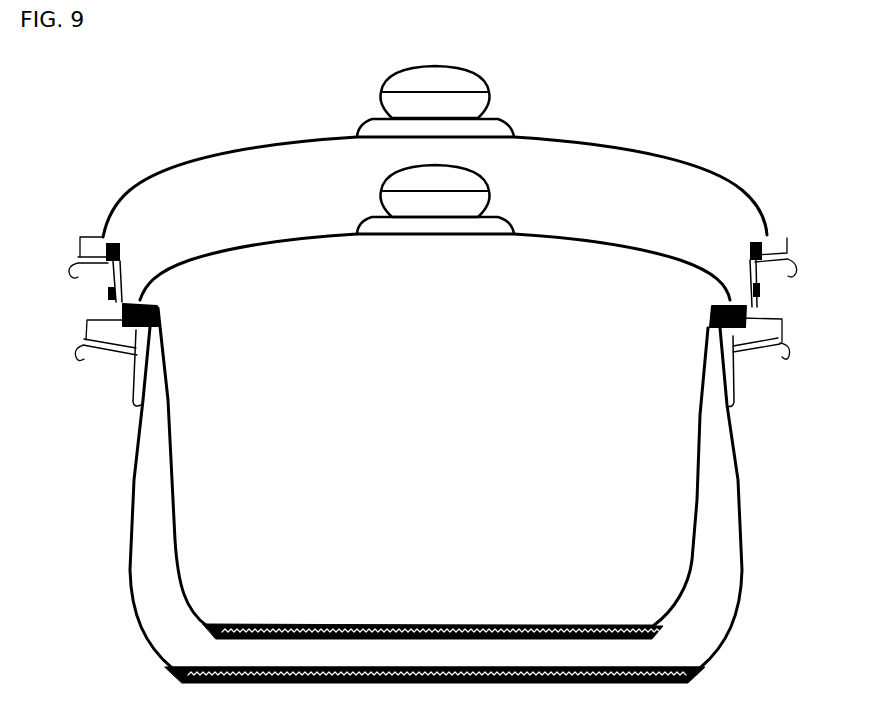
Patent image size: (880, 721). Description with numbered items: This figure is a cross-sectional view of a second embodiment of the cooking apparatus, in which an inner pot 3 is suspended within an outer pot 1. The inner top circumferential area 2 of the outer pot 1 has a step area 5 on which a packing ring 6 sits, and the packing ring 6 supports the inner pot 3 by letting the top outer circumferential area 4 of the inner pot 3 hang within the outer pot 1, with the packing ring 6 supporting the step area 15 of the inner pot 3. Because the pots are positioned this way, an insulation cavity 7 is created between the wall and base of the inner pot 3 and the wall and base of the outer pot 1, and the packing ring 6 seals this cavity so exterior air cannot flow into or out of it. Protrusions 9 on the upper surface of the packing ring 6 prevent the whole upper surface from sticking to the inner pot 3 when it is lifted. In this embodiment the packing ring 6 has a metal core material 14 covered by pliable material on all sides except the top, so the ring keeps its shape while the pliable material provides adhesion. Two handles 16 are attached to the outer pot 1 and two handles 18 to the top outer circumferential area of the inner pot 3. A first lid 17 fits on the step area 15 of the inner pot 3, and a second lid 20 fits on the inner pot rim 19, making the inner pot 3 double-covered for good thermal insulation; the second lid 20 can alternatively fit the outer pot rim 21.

The outer pot 1 is at (131, 486).
The inner top circumferential area 2 is at (121, 312).
The inner pot 3 is at (700, 473).
The top outer circumferential area 4 is at (758, 273).
The step area 5 is at (148, 333).
The packing ring 6 is at (782, 319).
The insulation cavity 7 is at (157, 590).
The protrusions 9 is at (707, 306).
The core material 14 is at (148, 307).
The step area 15 is at (730, 303).
The handles 16 is at (760, 350).
The first lid 17 is at (643, 253).
The handles 18 is at (776, 253).
The inner pot rim 19 is at (102, 240).
The second lid 20 is at (688, 170).
The outer pot rim 21 is at (108, 280).